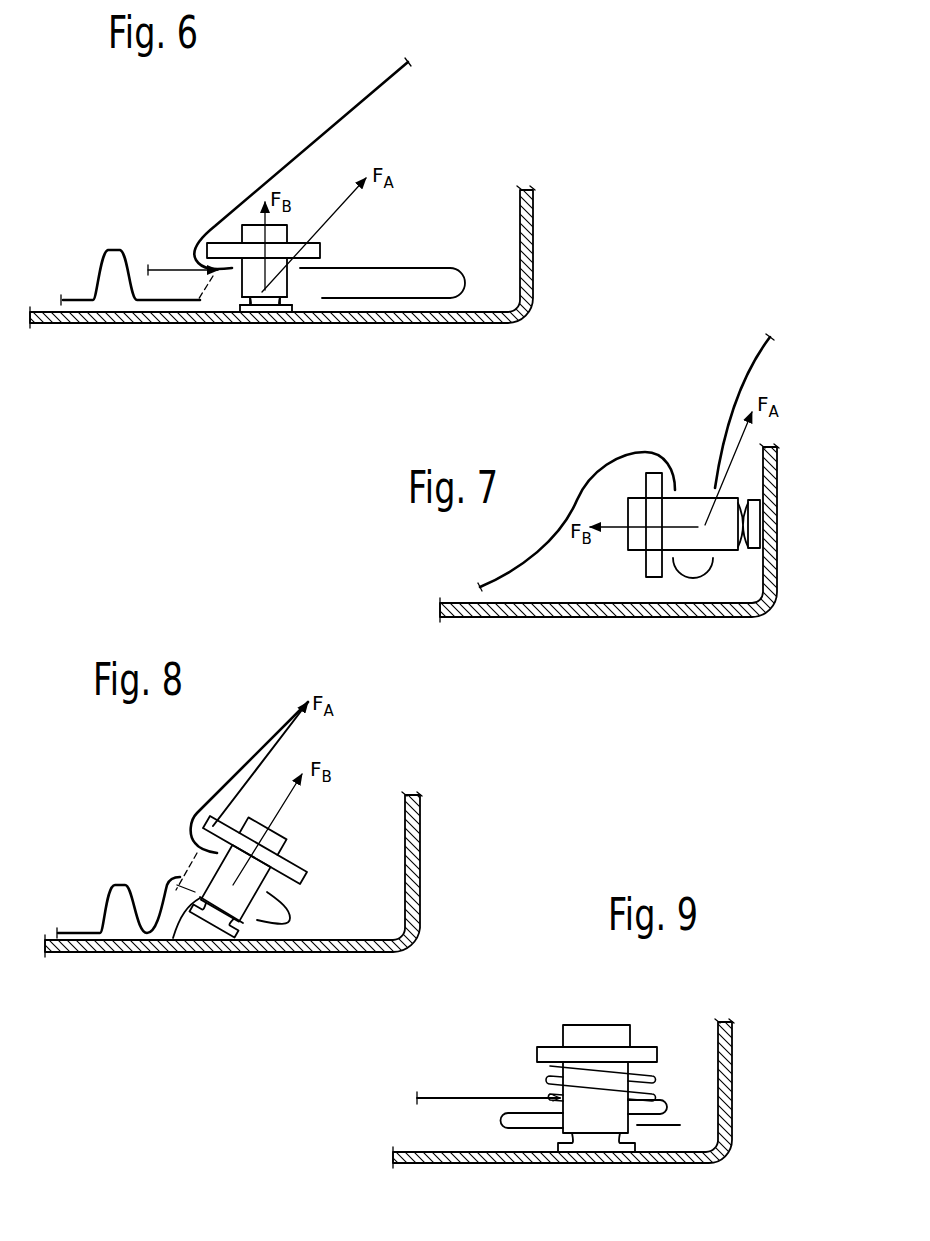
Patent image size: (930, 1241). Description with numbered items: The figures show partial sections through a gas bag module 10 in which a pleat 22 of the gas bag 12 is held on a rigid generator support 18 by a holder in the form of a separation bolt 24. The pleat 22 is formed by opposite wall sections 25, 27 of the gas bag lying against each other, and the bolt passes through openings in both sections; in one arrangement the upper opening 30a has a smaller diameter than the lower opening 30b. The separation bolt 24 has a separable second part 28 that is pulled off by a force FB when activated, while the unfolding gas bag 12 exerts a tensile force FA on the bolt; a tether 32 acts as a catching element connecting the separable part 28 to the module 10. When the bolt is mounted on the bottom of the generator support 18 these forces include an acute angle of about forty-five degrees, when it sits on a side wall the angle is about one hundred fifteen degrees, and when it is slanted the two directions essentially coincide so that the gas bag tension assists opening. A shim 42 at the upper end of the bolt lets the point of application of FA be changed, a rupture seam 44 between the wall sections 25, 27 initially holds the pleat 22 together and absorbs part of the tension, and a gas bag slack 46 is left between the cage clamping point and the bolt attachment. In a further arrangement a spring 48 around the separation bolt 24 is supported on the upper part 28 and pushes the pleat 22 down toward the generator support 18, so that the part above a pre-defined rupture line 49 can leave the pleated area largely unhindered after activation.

In FIG. 6, the gas bag module 10 is at (507, 148).
In FIG. 6, the gas bag 12 is at (345, 118).
In FIG. 7, the gas bag 12 is at (732, 396).
In FIG. 8, the gas bag 12 is at (240, 770).
In FIG. 9, the gas bag 12 is at (480, 1098).
In FIG. 6, the generator support 18 is at (388, 325).
In FIG. 7, the generator support 18 is at (755, 615).
In FIG. 8, the generator support 18 is at (420, 800).
In FIG. 9, the generator support 18 is at (732, 1040).
In FIG. 6, the pleat 22 is at (442, 289).
In FIG. 7, the pleat 22 is at (697, 590).
In FIG. 8, the pleat 22 is at (299, 926).
In FIG. 9, the pleat 22 is at (686, 1105).
In FIG. 6, the separation bolt 24 is at (335, 250).
In FIG. 7, the separation bolt 24 is at (740, 485).
In FIG. 8, the separation bolt 24 is at (249, 929).
In FIG. 9, the separation bolt 24 is at (596, 1021).
In FIG. 6, the gas bag wall section 25 is at (432, 267).
In FIG. 6, the gas bag wall section 27 is at (440, 300).
In FIG. 6, the second part of the separation bolt 28 is at (262, 293).
In FIG. 7, the second part of the separation bolt 28 is at (725, 538).
In FIG. 8, the second part of the separation bolt 28 is at (218, 898).
In FIG. 9, the second part of the separation bolt 28 is at (628, 1037).
In FIG. 6, the upper opening 30a is at (255, 285).
In FIG. 6, the lower opening 30b is at (305, 302).
In FIG. 6, the tether 32 is at (165, 262).
In FIG. 6, the shim 42 is at (220, 252).
In FIG. 8, the shim 42 is at (287, 868).
In FIG. 6, the rupture seam 44 is at (200, 288).
In FIG. 8, the rupture seam 44 is at (190, 862).
In FIG. 6, the gas bag slack 46 is at (100, 270).
In FIG. 9, the spring 48 is at (648, 1093).
In FIG. 8, the rupture line 49 is at (173, 938).
In FIG. 9, the rupture line 49 is at (632, 1137).